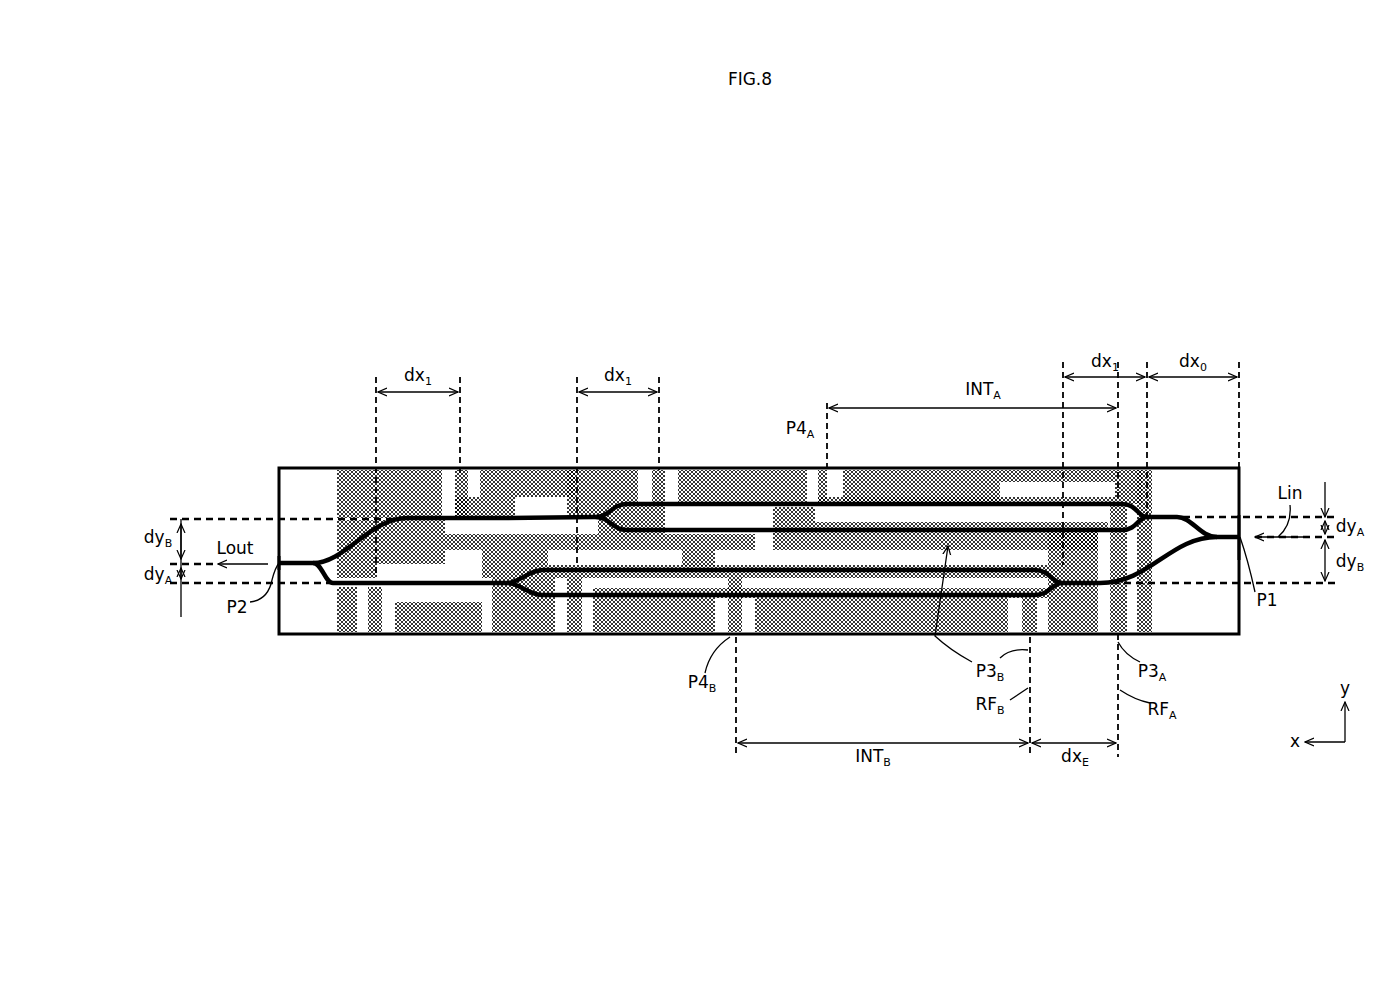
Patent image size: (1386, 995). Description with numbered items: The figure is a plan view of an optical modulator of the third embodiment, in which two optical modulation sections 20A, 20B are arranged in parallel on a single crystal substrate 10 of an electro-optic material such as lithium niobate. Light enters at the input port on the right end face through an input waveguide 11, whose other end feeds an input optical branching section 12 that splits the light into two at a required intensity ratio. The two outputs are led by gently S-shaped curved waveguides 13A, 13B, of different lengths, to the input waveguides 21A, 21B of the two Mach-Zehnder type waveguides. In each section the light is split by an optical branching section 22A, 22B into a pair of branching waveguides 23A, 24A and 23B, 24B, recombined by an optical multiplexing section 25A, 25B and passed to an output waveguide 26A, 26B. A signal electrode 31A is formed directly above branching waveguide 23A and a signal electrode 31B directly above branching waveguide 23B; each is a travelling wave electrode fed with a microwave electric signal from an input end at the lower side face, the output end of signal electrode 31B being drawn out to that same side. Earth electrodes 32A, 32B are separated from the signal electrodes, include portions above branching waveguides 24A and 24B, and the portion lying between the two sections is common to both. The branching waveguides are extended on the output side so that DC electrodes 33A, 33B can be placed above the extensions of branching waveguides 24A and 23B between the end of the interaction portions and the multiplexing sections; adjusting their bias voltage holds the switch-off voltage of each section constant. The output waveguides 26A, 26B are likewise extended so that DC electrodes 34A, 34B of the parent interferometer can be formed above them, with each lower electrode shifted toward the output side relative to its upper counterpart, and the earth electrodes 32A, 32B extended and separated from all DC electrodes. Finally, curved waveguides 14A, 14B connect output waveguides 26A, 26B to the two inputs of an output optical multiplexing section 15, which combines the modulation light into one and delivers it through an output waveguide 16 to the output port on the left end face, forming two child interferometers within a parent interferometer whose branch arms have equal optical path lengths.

The substrate 10 is at (1240, 636).
The input waveguide 11 is at (1241, 508).
The input optical branching section 12 is at (1220, 533).
The curved waveguide 13A is at (1190, 514).
The curved waveguide 13B is at (1175, 548).
The curved waveguide 14A is at (358, 560).
The curved waveguide 14B is at (330, 592).
The output optical multiplexing section 15 is at (310, 562).
The output waveguide 16 is at (285, 560).
The optical modulation section 20A is at (730, 395).
The optical modulation section 20B is at (655, 708).
The input waveguide 21A is at (1168, 514).
The input waveguide 21B is at (1075, 586).
The optical branching section 22A is at (1148, 513).
The optical branching section 22B is at (1062, 585).
The branching waveguide 23A is at (898, 500).
The branching waveguide 23B is at (795, 576).
The branching waveguide 24A is at (855, 525).
The branching waveguide 24B is at (768, 602).
The optical multiplexing section 25A is at (595, 514).
The optical multiplexing section 25B is at (508, 587).
The output waveguide 26A is at (558, 510).
The output waveguide 26B is at (473, 588).
The signal electrode 31A is at (958, 500).
The signal electrode 31B is at (862, 576).
The earth electrode 32A is at (1008, 525).
The earth electrode 32B is at (905, 602).
The DC electrode 33A is at (733, 528).
The DC electrode 33B is at (625, 577).
The DC electrode 34A is at (505, 505).
The DC electrode 34B is at (422, 596).